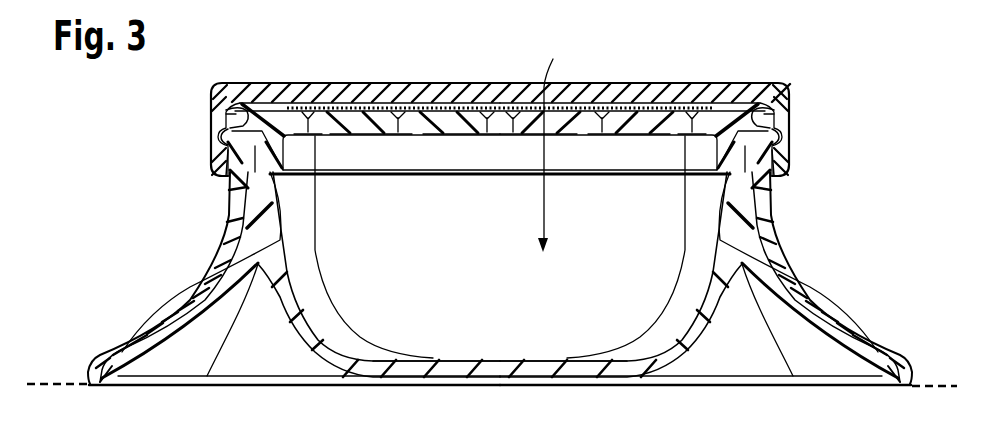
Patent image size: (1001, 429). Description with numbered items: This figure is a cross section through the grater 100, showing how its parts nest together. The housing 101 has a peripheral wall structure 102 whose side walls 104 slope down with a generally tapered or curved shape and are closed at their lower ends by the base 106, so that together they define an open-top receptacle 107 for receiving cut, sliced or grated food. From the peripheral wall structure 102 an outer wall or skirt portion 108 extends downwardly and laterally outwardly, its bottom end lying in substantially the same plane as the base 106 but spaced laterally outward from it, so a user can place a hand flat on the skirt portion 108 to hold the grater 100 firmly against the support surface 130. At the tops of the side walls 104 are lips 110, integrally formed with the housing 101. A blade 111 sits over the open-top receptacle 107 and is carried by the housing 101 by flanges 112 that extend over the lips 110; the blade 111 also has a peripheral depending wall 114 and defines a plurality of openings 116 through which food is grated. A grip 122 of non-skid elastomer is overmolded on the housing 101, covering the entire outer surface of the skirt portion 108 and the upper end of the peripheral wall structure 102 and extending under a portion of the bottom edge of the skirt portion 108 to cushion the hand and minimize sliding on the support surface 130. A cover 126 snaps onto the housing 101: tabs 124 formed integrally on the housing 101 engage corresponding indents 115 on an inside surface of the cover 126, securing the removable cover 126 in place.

The grater 100 is at (652, 92).
The housing 101 is at (765, 185).
The peripheral wall structure 102 is at (770, 211).
The side wall 104 is at (298, 257).
The base 106 is at (497, 348).
The open-top receptacle 107 is at (556, 145).
The skirt portion 108 is at (810, 310).
The lip 110 is at (211, 118).
The blade 111 is at (489, 100).
The flange 112 is at (242, 108).
The peripheral depending wall 114 is at (578, 153).
The indent 115 is at (218, 135).
The opening 116 is at (385, 110).
The grip 122 is at (142, 333).
The tab 124 is at (214, 161).
The cover 126 is at (275, 80).
The support surface 130 is at (937, 383).